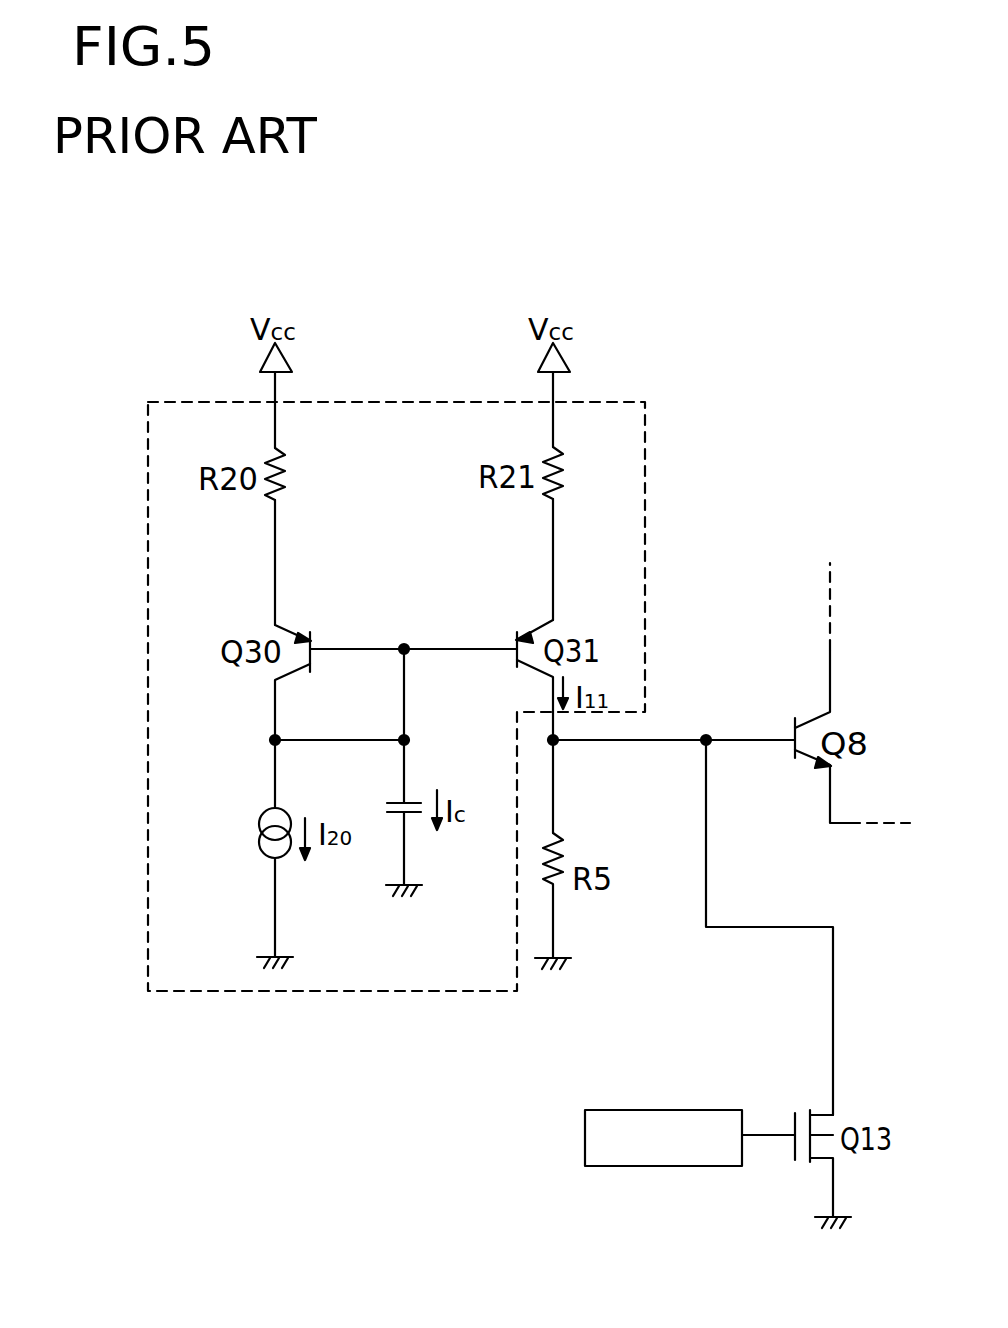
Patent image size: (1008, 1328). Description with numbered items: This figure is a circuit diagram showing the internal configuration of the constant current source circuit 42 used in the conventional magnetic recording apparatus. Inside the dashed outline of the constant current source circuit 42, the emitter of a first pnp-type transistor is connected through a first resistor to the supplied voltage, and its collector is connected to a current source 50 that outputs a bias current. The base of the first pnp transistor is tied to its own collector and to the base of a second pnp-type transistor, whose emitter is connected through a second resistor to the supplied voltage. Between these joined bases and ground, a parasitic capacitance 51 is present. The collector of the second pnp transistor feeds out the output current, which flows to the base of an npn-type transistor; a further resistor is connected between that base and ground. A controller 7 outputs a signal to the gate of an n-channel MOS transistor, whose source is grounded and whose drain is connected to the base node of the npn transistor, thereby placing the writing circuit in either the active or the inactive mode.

The constant current source circuit 42 is at (621, 401).
The current source 50 is at (289, 856).
The parasitic capacitance 51 is at (418, 824).
The controller 7 is at (641, 1167).